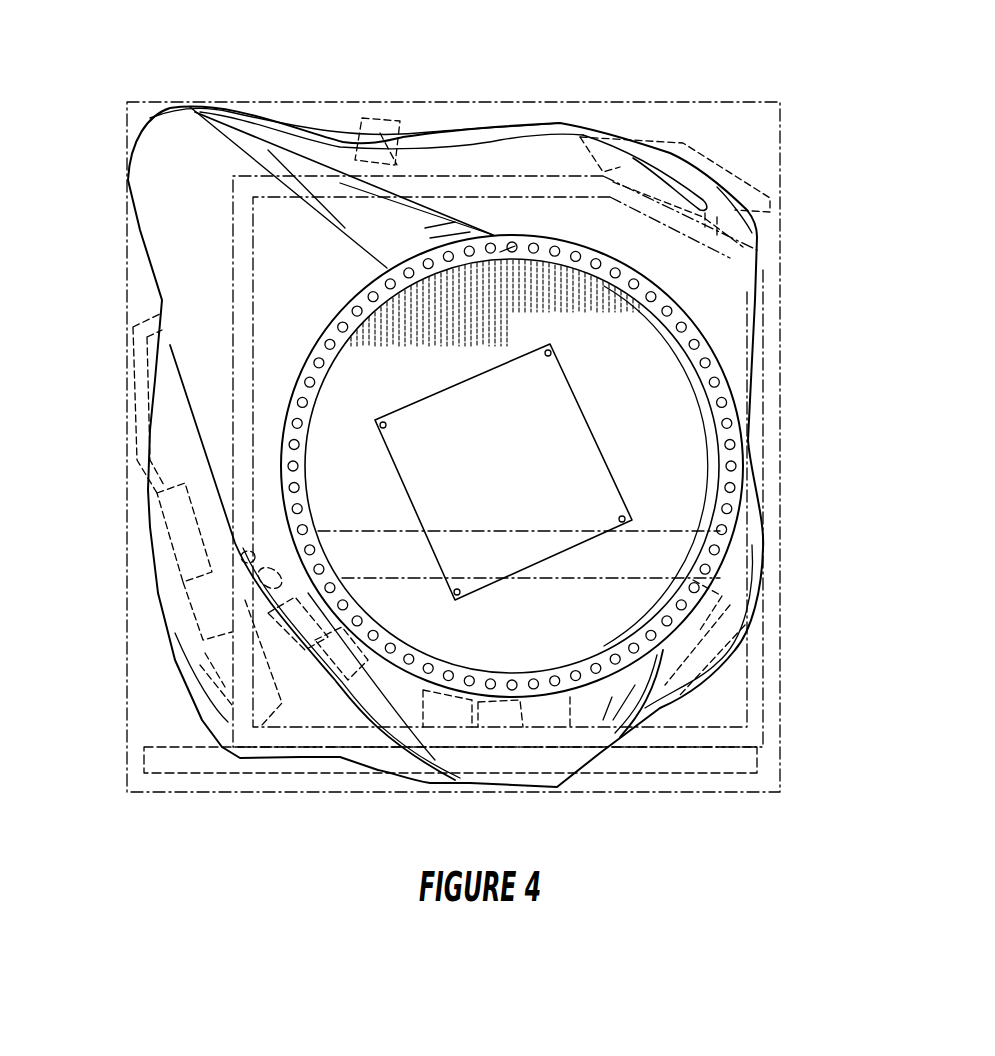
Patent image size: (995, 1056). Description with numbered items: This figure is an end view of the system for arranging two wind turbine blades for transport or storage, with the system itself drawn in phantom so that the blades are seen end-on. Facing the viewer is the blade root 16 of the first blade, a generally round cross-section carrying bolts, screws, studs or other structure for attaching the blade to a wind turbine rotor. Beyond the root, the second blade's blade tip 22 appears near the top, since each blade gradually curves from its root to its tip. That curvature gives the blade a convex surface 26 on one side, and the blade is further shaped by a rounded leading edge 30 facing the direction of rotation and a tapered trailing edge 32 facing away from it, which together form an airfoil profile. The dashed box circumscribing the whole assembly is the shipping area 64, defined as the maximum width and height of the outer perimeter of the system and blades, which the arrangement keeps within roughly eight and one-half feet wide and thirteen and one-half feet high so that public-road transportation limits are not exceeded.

The blade root 16 is at (712, 347).
The blade tip 22 is at (693, 174).
The convex surface 26 is at (162, 628).
The leading edge 30 is at (740, 650).
The trailing edge 32 is at (210, 103).
The shipping area 64 is at (130, 672).